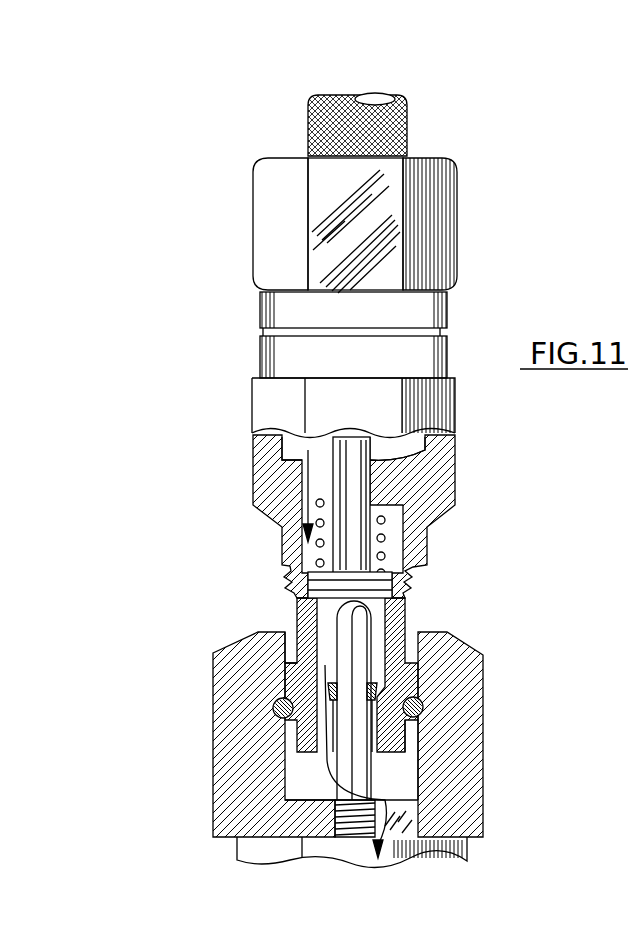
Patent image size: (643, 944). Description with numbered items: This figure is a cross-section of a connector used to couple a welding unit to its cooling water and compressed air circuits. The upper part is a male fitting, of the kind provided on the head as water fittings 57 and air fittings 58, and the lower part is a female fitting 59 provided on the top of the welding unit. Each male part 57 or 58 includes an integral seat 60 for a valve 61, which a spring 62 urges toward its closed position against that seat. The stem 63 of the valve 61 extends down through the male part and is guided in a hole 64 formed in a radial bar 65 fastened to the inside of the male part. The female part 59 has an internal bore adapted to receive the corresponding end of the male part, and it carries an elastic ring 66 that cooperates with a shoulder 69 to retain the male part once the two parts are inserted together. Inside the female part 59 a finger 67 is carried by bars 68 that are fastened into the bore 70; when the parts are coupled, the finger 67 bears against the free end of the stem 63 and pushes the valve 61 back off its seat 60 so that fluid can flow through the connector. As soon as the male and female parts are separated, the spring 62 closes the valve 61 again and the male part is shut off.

The fitting 57 is at (411, 129).
The fitting 58 is at (466, 201).
The female fitting 59 is at (210, 678).
The seat 60 is at (400, 580).
The valve 61 is at (320, 578).
The spring 62 is at (385, 537).
The stem 63 is at (375, 480).
The hole 64 is at (400, 457).
The radial bar 65 is at (300, 468).
The elastic ring 66 is at (420, 725).
The finger 67 is at (357, 772).
The bars 68 is at (407, 817).
The shoulder 69 is at (418, 672).
The bore 70 is at (283, 633).